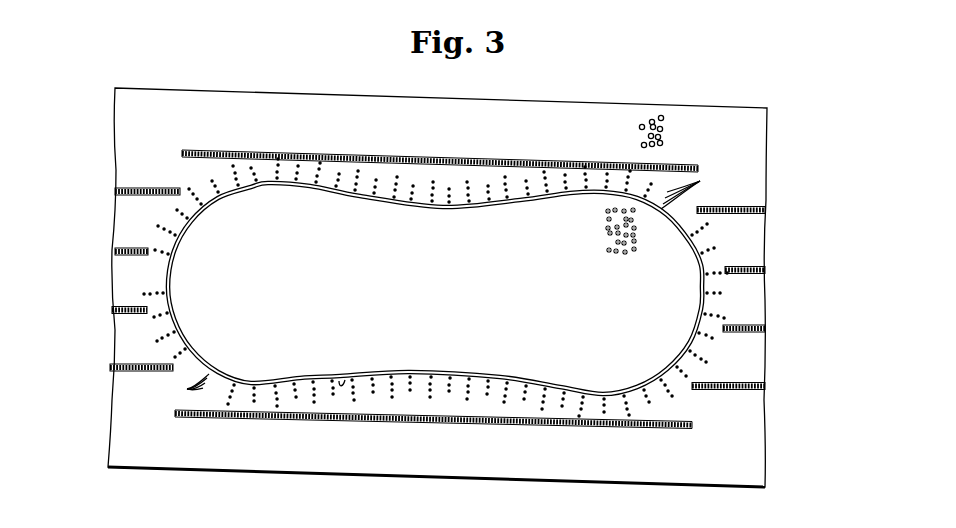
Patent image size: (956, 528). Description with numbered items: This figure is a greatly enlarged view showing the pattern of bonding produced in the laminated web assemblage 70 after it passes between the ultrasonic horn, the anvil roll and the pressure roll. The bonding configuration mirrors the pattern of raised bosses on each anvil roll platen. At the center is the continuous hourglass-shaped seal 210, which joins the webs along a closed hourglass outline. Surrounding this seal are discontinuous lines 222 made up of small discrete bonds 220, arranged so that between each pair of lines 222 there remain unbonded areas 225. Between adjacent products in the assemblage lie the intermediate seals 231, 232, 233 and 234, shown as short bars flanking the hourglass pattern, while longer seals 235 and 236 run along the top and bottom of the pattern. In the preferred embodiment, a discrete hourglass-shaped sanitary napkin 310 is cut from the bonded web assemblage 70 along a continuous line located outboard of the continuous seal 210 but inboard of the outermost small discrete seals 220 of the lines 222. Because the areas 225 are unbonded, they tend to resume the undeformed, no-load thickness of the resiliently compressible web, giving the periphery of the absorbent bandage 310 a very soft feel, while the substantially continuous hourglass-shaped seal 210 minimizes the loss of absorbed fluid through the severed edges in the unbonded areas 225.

The web assemblage 70 is at (186, 76).
The continuous hourglass-shaped seal 210 is at (483, 376).
The small discrete bonds 220 is at (700, 181).
The lines of small discrete bonds 222 is at (345, 380).
The unbonded areas 225 is at (155, 268).
The seal intermediate adjacent products 231 is at (128, 363).
The seal intermediate adjacent products 232 is at (130, 307).
The seal intermediate adjacent products 233 is at (128, 248).
The seal intermediate adjacent products 234 is at (130, 188).
The seal 235 is at (530, 421).
The seal 236 is at (550, 162).
The sanitary napkin 310 is at (492, 308).